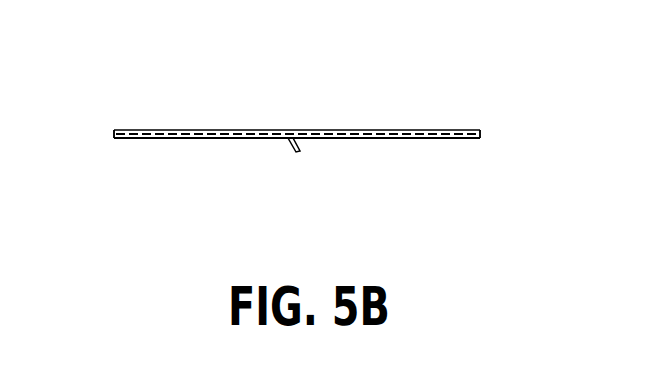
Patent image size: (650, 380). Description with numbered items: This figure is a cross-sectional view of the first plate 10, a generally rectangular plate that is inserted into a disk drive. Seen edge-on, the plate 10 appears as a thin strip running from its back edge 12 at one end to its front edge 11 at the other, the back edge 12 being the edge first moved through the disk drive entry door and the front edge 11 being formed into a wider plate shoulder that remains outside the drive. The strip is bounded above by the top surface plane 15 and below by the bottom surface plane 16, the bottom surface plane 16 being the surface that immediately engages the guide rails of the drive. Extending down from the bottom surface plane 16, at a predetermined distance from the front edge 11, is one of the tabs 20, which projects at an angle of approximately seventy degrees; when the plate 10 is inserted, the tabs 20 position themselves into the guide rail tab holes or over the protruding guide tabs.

The first plate 10 is at (219, 39).
The front edge 11 is at (480, 131).
The back edge 12 is at (114, 131).
The top surface plane 15 is at (355, 131).
The bottom surface plane 16 is at (197, 139).
The tabs 20 is at (290, 143).